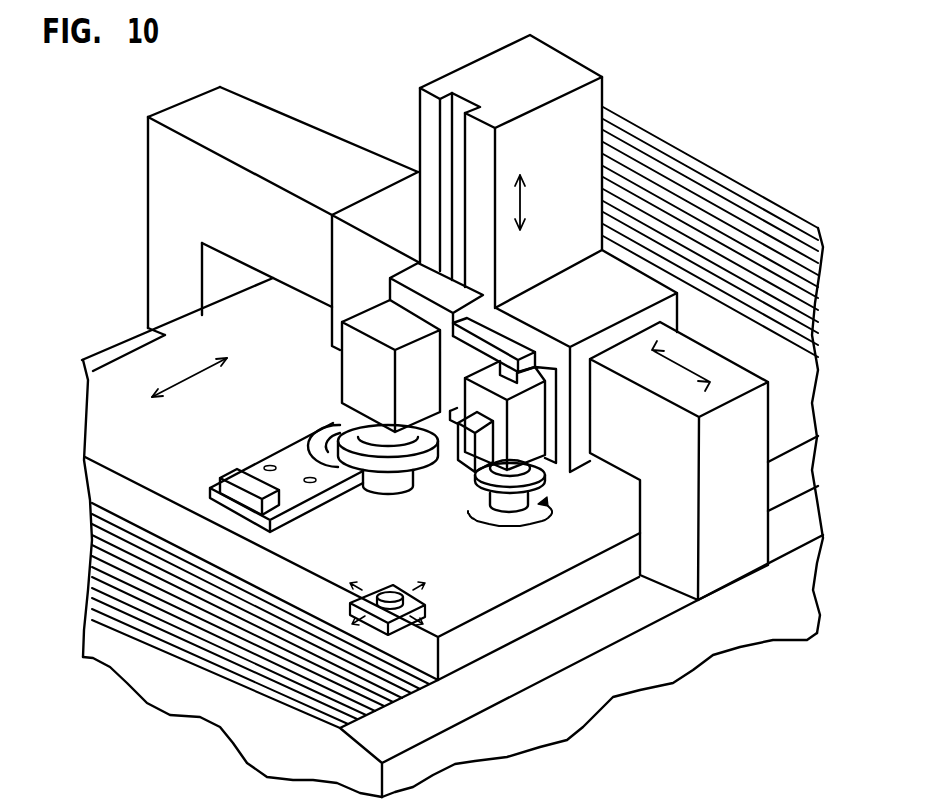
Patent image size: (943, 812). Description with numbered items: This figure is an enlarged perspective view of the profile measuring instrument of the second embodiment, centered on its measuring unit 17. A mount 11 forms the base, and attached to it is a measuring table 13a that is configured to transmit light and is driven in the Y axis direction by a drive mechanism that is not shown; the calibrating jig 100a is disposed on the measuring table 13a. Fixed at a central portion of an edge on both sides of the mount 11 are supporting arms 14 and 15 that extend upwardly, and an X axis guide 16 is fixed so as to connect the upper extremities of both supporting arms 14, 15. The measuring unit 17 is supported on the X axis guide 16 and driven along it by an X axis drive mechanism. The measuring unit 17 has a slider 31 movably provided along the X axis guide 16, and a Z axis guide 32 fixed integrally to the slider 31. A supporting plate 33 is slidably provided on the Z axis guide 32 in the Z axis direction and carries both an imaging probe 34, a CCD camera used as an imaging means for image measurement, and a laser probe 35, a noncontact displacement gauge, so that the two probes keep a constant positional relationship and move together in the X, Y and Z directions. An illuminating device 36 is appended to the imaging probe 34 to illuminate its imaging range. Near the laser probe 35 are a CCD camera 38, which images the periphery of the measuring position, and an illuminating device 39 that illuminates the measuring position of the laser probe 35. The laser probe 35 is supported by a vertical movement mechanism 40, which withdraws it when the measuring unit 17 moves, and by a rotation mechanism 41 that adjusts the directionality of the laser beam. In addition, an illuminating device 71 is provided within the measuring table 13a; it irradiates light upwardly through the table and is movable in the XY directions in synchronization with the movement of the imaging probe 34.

The mount 11 is at (483, 695).
The measuring table 13a is at (466, 602).
The supporting arm 14 is at (147, 224).
The supporting arm 15 is at (727, 555).
The X axis guide 16 is at (307, 142).
The measuring unit 17 is at (389, 93).
The slider 31 is at (391, 199).
The Z axis guide 32 is at (546, 58).
The supporting plate 33 is at (398, 293).
The imaging probe 34 is at (359, 375).
The laser probe 35 is at (508, 508).
The illuminating device 36 is at (418, 470).
The CCD camera 38 is at (463, 451).
The illuminating device 39 is at (490, 525).
The vertical movement mechanism 40 is at (525, 431).
The rotation mechanism 41 is at (534, 478).
The illuminating device 71 is at (393, 589).
The calibrating jig 100a is at (243, 468).